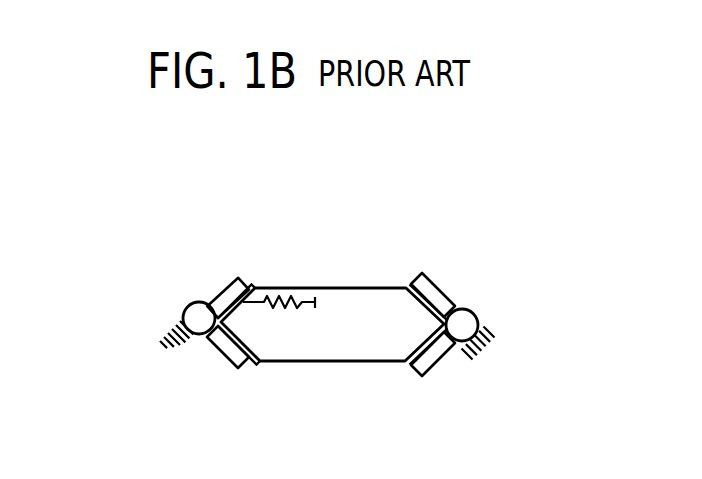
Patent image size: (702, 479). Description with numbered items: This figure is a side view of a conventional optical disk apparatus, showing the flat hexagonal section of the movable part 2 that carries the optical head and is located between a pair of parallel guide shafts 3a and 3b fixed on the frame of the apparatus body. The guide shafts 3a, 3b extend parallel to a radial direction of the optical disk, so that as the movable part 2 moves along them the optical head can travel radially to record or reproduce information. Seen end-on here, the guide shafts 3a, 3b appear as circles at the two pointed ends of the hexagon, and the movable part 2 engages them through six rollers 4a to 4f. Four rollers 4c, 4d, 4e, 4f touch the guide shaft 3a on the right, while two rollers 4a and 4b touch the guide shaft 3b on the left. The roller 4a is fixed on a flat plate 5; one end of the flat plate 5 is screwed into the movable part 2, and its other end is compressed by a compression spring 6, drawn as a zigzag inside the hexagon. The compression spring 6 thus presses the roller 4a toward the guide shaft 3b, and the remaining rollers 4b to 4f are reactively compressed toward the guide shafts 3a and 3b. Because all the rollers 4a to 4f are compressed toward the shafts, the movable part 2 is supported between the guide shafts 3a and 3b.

The movable part 2 is at (369, 288).
The guide shaft 3a is at (476, 316).
The guide shaft 3b is at (195, 303).
The roller 4a is at (241, 276).
The roller 4b is at (236, 370).
The roller 4c is at (477, 282).
The roller 4d is at (426, 283).
The roller 4e is at (459, 383).
The roller 4f is at (424, 376).
The flat plate 5 is at (247, 282).
The compression spring 6 is at (290, 295).